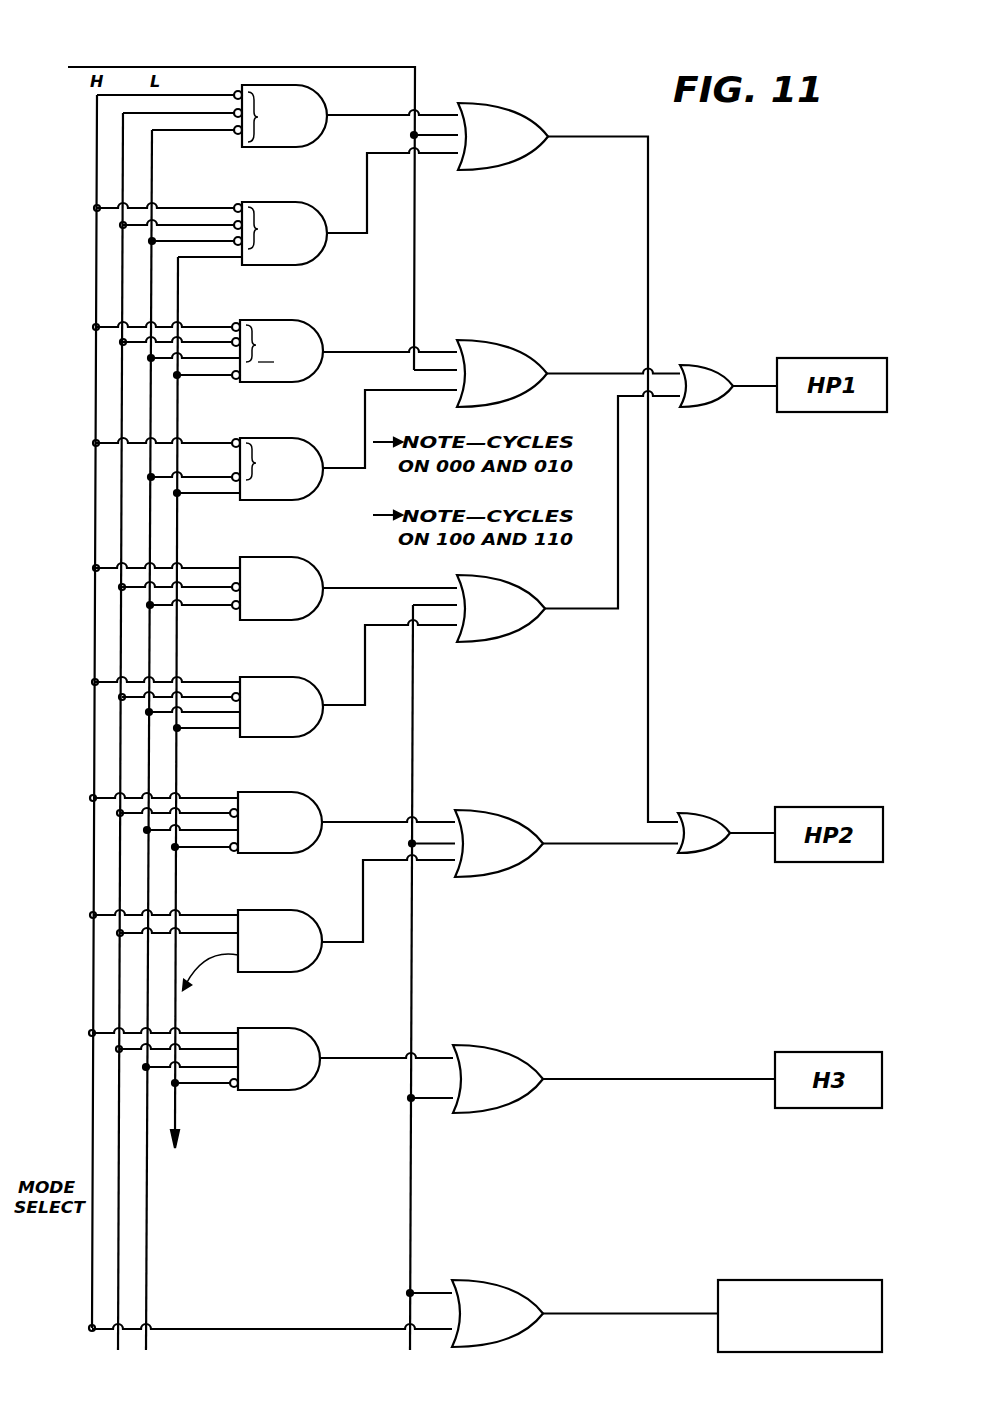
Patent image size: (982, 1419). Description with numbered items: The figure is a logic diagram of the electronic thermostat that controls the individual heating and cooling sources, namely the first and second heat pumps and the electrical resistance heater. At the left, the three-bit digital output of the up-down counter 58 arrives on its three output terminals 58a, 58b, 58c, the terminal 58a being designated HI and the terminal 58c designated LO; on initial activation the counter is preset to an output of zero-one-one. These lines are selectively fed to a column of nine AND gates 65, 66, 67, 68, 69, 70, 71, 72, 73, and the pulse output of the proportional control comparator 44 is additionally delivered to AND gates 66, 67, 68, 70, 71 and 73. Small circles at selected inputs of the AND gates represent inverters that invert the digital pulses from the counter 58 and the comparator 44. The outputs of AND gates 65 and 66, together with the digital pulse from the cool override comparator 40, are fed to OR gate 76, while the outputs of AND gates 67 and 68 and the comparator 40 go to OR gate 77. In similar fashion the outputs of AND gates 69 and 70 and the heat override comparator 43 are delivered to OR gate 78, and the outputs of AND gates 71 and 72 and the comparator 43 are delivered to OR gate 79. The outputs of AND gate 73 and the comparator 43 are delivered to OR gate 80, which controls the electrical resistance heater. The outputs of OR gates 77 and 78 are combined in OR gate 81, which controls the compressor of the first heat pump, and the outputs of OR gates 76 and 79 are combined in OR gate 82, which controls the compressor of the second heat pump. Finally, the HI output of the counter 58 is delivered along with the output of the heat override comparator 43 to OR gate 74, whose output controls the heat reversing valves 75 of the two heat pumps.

The cool override comparator 40 is at (302, 204).
The heat override comparator 43 is at (459, 1003).
The proportional control comparator 44 is at (262, 749).
The up-down counter 58 is at (161, 1377).
The output terminal 58a is at (90, 1325).
The output terminal 58b is at (117, 1345).
The output terminal 58c is at (148, 1342).
The AND gate 65 is at (325, 98).
The AND gate 66 is at (313, 207).
The AND gate 67 is at (318, 326).
The AND gate 68 is at (318, 442).
The AND gate 69 is at (318, 547).
The AND gate 70 is at (315, 683).
The AND gate 71 is at (318, 800).
The AND gate 72 is at (312, 915).
The AND gate 73 is at (314, 1080).
The OR gate 74 is at (529, 1290).
The heat reversing valves 75 is at (718, 1298).
The OR gate 76 is at (530, 108).
The OR gate 77 is at (530, 345).
The OR gate 78 is at (530, 627).
The OR gate 79 is at (535, 818).
The OR gate 80 is at (531, 1055).
The OR gate 81 is at (744, 352).
The OR gate 82 is at (718, 812).